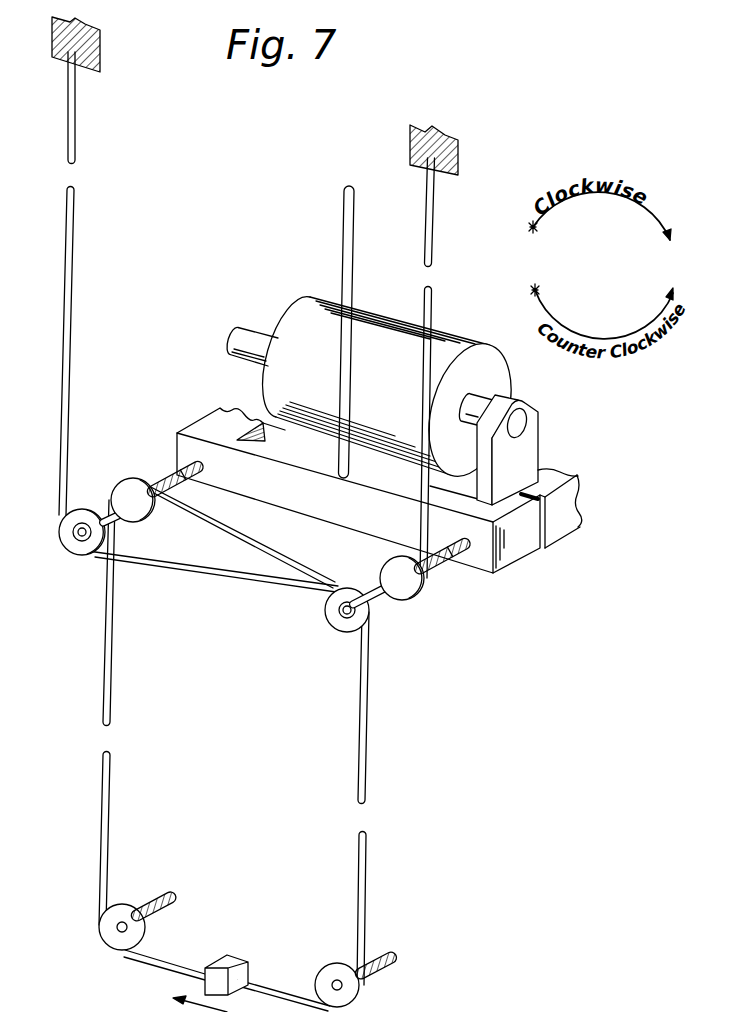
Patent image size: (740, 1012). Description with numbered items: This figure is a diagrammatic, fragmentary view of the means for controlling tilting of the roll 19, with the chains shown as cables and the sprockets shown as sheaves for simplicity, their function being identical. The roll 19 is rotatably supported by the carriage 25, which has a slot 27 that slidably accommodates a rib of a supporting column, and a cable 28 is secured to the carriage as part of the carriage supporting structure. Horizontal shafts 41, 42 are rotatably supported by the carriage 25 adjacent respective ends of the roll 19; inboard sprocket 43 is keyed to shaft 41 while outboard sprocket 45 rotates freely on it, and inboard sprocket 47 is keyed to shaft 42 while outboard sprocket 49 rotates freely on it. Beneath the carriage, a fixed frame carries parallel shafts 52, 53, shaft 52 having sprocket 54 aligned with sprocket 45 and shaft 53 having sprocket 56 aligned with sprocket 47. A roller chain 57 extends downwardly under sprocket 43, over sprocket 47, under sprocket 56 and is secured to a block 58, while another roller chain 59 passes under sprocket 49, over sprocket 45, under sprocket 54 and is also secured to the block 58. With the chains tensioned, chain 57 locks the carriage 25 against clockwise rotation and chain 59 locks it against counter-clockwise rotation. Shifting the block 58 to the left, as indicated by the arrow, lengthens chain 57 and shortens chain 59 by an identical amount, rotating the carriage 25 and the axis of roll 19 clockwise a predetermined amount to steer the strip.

The roll 19 is at (297, 313).
The carriage 25 is at (298, 501).
The slot 27 is at (540, 537).
The cable 28 is at (333, 208).
The horizontal shaft 41 is at (457, 560).
The horizontal shaft 42 is at (168, 479).
The inboard sprocket 43 is at (414, 596).
The outboard sprocket 45 is at (351, 627).
The inboard sprocket 47 is at (142, 518).
The outboard sprocket 49 is at (83, 546).
The shaft 52 is at (393, 958).
The shaft 53 is at (170, 897).
The sprocket 54 is at (348, 997).
The sprocket 56 is at (121, 909).
The roller chain 57 is at (430, 218).
The block 58 is at (228, 968).
The roller chain 59 is at (67, 289).